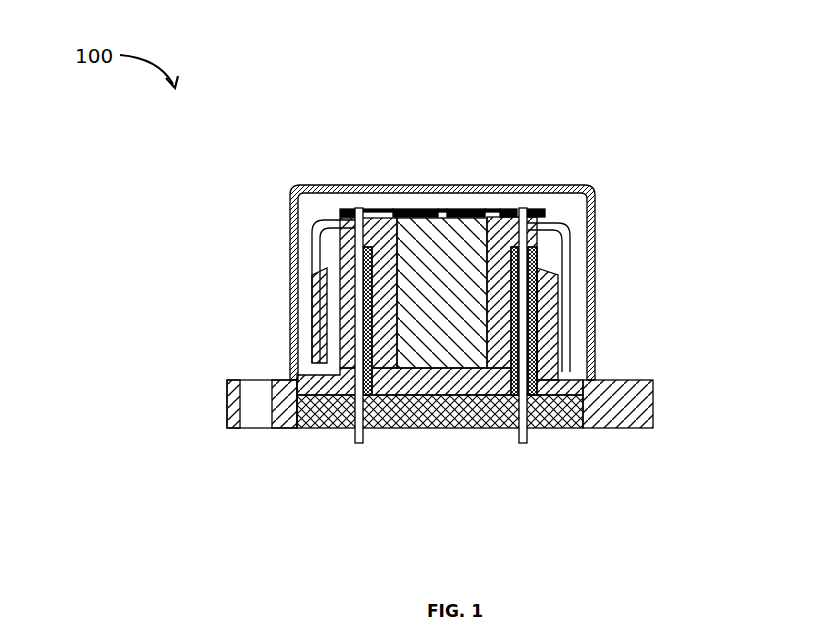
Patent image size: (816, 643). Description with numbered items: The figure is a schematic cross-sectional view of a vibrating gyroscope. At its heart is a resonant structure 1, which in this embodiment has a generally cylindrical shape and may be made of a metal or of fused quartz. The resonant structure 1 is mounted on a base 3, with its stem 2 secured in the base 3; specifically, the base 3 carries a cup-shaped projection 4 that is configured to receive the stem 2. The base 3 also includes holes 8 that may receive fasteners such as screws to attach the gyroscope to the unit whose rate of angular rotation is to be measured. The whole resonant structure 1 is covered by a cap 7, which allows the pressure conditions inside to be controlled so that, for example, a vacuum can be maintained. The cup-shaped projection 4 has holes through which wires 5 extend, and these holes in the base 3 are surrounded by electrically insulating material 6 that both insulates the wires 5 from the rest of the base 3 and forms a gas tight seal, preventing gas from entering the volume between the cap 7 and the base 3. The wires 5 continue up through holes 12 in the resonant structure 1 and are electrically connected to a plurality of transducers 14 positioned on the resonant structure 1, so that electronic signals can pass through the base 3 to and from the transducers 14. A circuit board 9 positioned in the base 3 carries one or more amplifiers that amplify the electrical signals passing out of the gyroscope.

The resonant structure 1 is at (318, 293).
The stem 2 is at (422, 335).
The base 3 is at (617, 392).
The cup-shaped projection 4 is at (383, 333).
The wires 5 is at (330, 253).
The electrically insulating material 6 is at (335, 225).
The cap 7 is at (470, 190).
The holes 8 is at (257, 428).
The circuit board 9 is at (453, 415).
The holes 12 is at (357, 212).
The transducers 14 is at (372, 212).